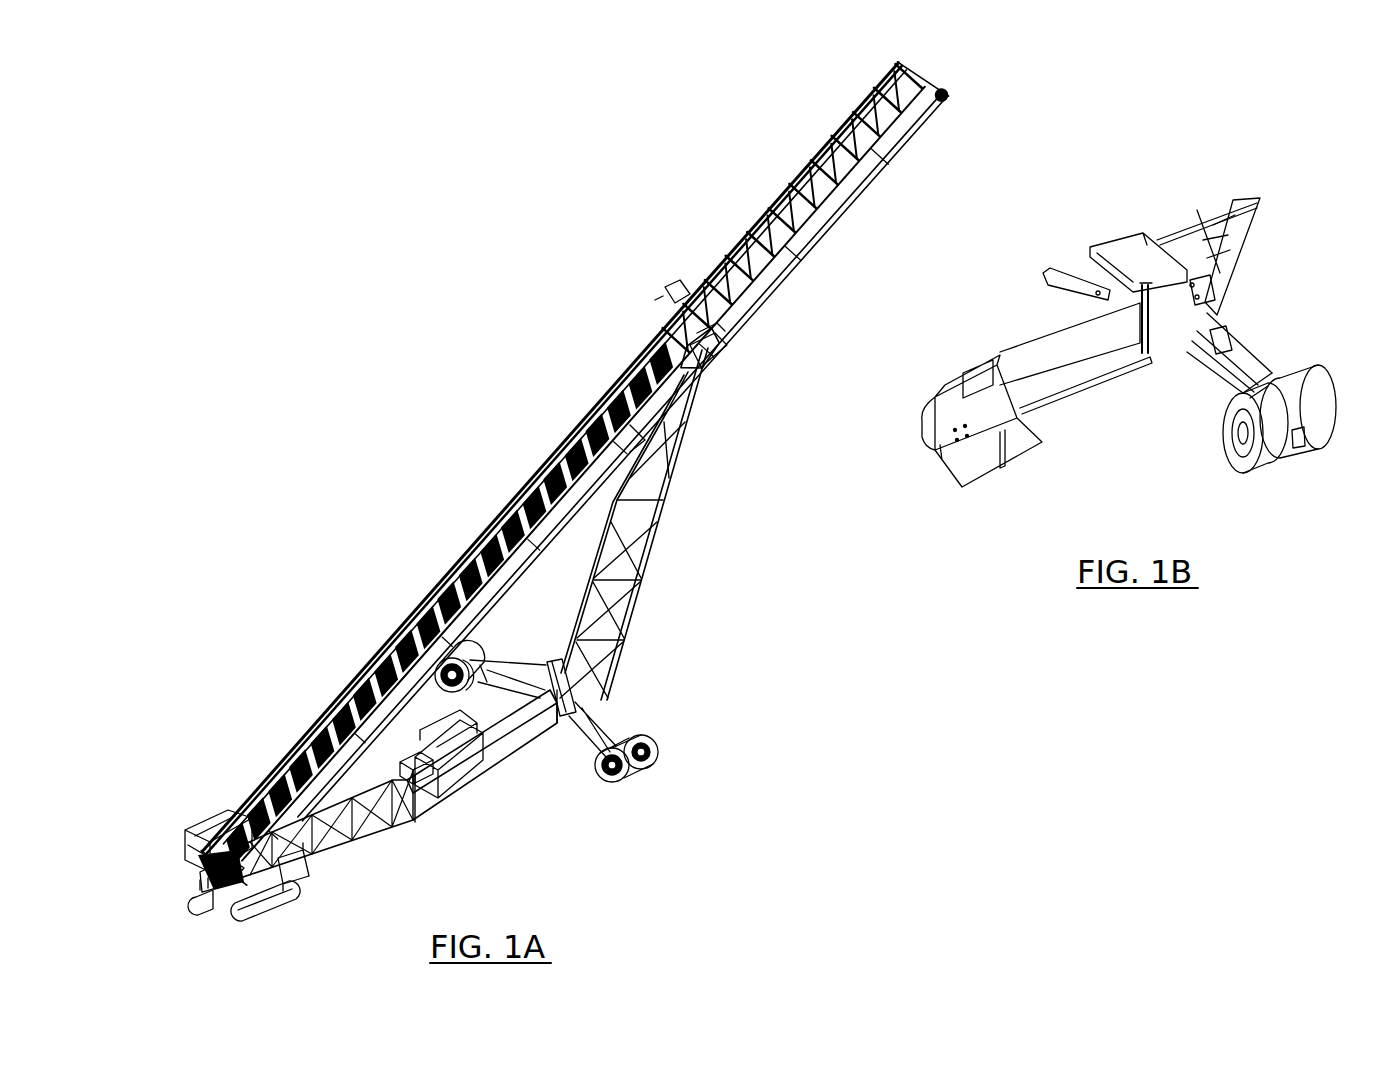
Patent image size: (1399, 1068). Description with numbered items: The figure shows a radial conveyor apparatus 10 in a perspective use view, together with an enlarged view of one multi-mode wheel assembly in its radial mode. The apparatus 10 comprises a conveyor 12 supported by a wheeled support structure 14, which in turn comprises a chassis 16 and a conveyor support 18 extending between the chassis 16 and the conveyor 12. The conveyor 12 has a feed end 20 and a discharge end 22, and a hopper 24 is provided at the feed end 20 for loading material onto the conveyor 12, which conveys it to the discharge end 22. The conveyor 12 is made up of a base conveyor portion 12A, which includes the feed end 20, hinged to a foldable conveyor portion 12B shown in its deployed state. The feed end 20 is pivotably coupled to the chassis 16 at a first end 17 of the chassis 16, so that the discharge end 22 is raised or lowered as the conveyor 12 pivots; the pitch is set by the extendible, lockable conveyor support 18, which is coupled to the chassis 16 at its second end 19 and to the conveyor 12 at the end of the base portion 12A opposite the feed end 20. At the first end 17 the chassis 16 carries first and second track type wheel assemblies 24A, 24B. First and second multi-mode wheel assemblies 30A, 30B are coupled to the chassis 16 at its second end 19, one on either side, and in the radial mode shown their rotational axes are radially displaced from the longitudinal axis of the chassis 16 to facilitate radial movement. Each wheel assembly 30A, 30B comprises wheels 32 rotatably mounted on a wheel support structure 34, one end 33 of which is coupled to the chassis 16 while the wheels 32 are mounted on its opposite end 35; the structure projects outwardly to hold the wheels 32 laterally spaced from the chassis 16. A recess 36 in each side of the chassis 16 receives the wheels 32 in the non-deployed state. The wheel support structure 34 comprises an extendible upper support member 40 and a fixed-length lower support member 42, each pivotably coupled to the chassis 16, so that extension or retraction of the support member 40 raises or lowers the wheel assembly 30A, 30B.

In FIG. 1A, the radial conveyor apparatus 10 is at (494, 300).
In FIG. 1A, the conveyor 12 is at (836, 223).
In FIG. 1A, the base conveyor portion 12A is at (533, 478).
In FIG. 1A, the foldable conveyor portion 12B is at (781, 193).
In FIG. 1A, the wheeled support structure 14 is at (614, 680).
In FIG. 1A, the chassis 16 is at (456, 802).
In FIG. 1B, the chassis 16 is at (1056, 386).
In FIG. 1A, the first end of the chassis 17 is at (286, 868).
In FIG. 1A, the conveyor support 18 is at (680, 456).
In FIG. 1B, the conveyor support 18 is at (1257, 203).
In FIG. 1A, the second end of the chassis 19 is at (558, 690).
In FIG. 1A, the feed end 20 is at (222, 858).
In FIG. 1A, the discharge end 22 is at (920, 80).
In FIG. 1A, the hopper 24 is at (222, 820).
In FIG. 1A, the first track type wheel assembly 24A is at (272, 906).
In FIG. 1A, the second track type wheel assembly 24B is at (203, 912).
In FIG. 1A, the first multi-mode wheel assembly 30A is at (651, 750).
In FIG. 1B, the first multi-mode wheel assembly 30A is at (1284, 262).
In FIG. 1A, the second multi-mode wheel assembly 30B is at (488, 646).
In FIG. 1B, the wheel 32 is at (1242, 462).
In FIG. 1B, the end of the wheel support structure 33 is at (1196, 283).
In FIG. 1B, the wheel support structure 34 is at (1238, 341).
In FIG. 1B, the opposite end of the wheel support structure 35 is at (1300, 442).
In FIG. 1B, the recess 36 is at (1038, 338).
In FIG. 1B, the upper support member 40 is at (1252, 373).
In FIG. 1B, the lower support member 42 is at (1210, 376).